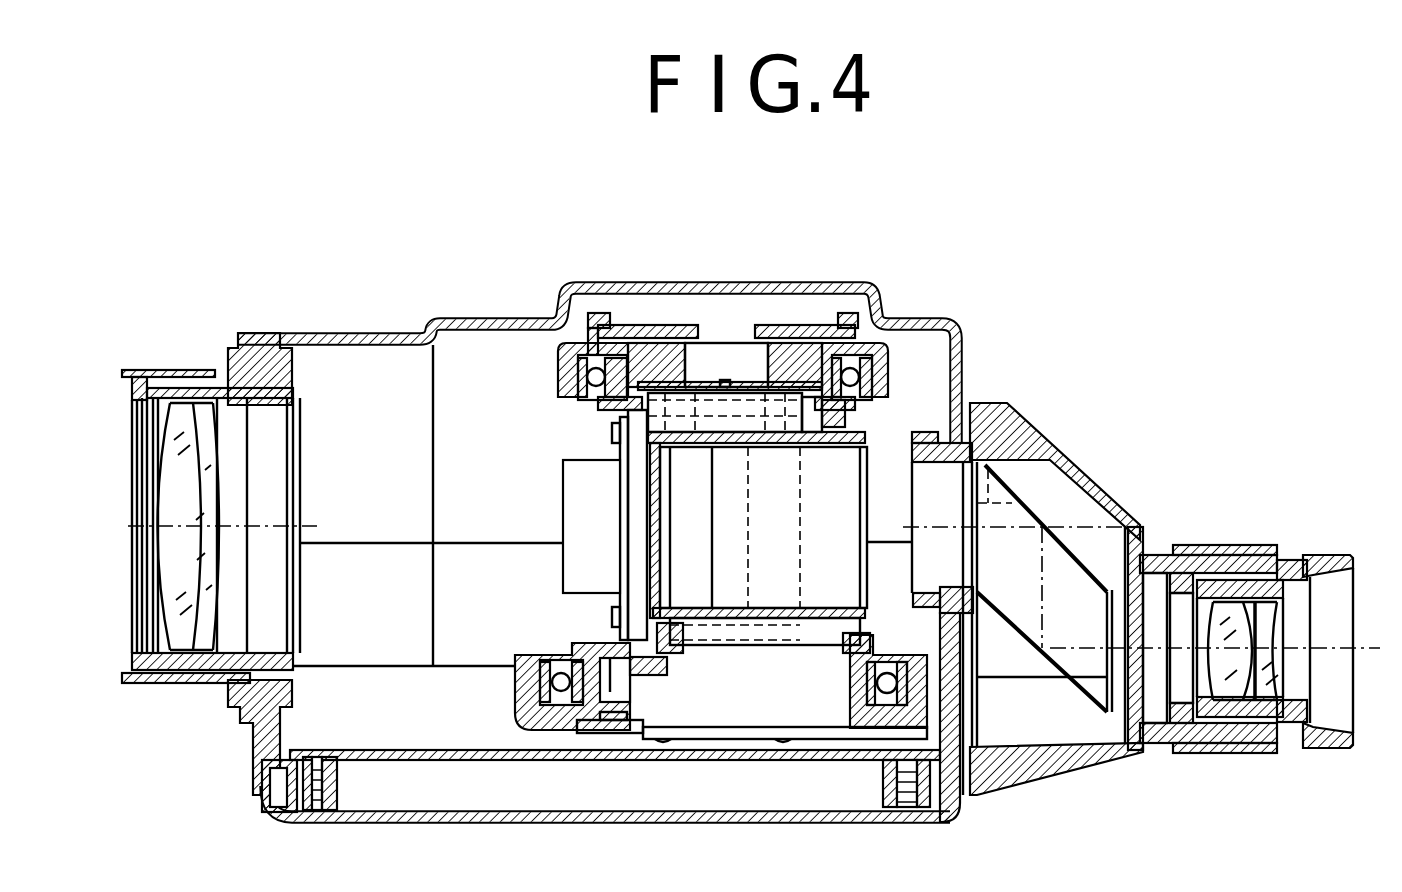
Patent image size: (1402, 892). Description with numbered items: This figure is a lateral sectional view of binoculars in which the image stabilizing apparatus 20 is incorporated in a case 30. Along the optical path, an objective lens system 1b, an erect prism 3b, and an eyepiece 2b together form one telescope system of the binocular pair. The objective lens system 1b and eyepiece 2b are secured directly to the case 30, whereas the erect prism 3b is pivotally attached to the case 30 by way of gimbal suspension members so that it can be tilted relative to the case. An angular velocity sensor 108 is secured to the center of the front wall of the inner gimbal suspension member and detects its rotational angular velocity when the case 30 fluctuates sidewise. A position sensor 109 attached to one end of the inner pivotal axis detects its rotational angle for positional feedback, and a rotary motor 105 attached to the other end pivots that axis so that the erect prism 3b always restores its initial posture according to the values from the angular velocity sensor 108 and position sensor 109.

The objective lens system 1b is at (170, 354).
The eyepiece system 2b is at (1242, 540).
The erect prism 3b is at (850, 473).
The image stabilizing apparatus 20 is at (909, 370).
The case 30 is at (467, 313).
The rotary motor 105 is at (725, 350).
The angular velocity sensor 108 is at (573, 472).
The position sensor 109 is at (631, 706).